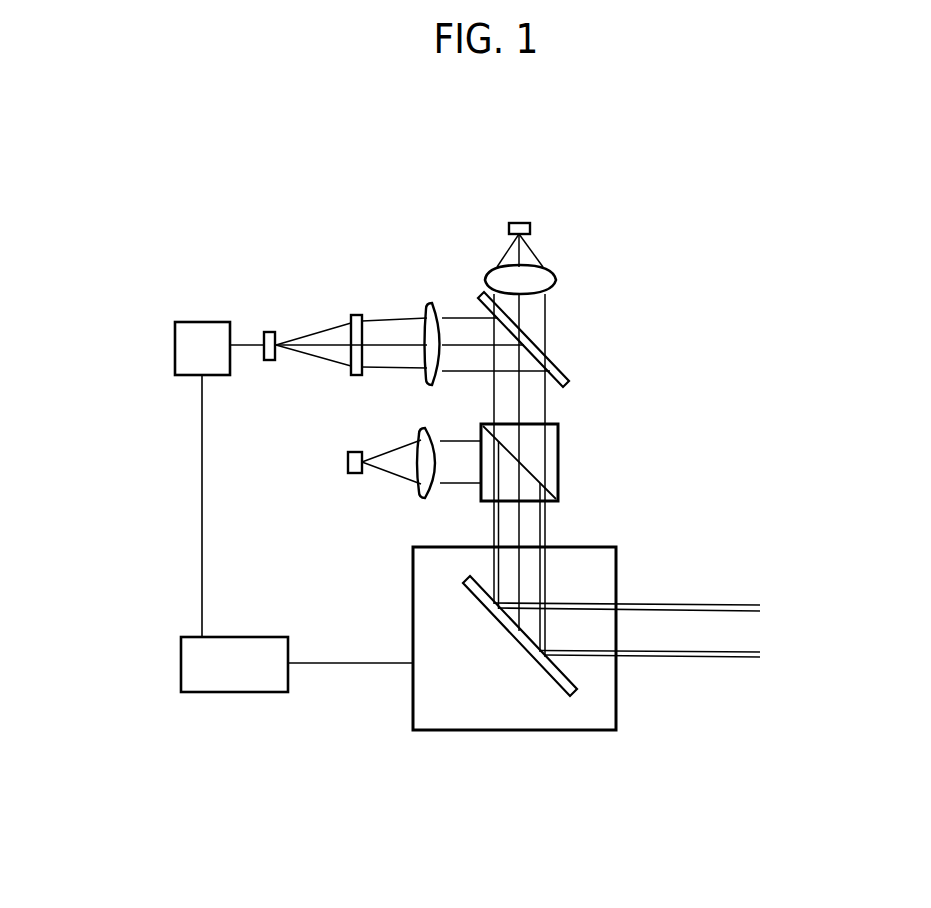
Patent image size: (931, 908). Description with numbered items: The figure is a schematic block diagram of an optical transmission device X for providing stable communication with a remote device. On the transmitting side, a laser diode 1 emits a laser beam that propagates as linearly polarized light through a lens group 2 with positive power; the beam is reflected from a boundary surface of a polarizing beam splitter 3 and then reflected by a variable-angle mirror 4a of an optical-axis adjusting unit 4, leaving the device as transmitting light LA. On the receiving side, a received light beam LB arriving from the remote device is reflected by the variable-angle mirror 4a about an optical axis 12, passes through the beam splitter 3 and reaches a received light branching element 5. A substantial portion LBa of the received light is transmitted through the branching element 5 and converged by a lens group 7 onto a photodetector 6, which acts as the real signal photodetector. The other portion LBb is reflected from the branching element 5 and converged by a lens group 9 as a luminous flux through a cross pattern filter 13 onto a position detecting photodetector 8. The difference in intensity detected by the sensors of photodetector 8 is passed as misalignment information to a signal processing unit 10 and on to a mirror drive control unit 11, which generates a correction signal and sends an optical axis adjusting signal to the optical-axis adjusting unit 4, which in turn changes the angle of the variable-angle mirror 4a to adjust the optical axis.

The laser diode 1 is at (355, 476).
The lens group 2 is at (431, 440).
The polarizing beam splitter 3 is at (559, 430).
The optical-axis adjusting unit 4 is at (471, 733).
The variable-angle mirror 4a is at (574, 678).
The received light branching element 5 is at (538, 352).
The photodetector 6 is at (519, 222).
The lens group 7 is at (550, 283).
The photodetector 8 is at (268, 331).
The lens group 9 is at (430, 306).
The signal processing unit 10 is at (199, 327).
The mirror drive control unit 11 is at (219, 685).
The optical axis 12 is at (518, 568).
The cross pattern filter 13 is at (358, 376).
The transmitting light LA is at (762, 605).
The received light beam LB is at (817, 603).
The substantial portion of received light beam LBa is at (522, 315).
The other portion of light beam LBb is at (464, 337).
The optical transmission device X is at (728, 294).